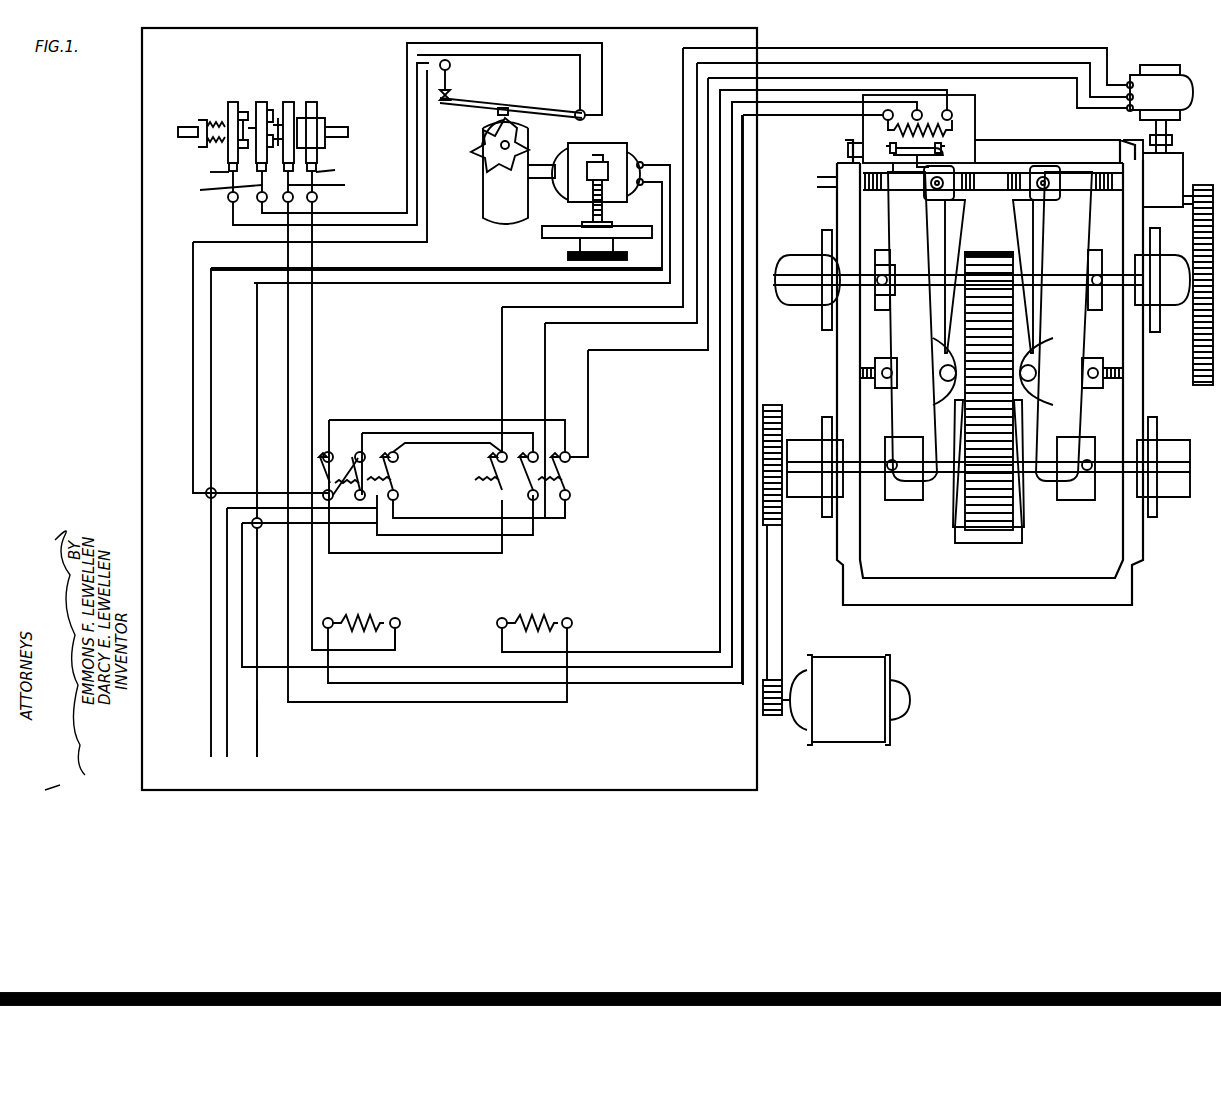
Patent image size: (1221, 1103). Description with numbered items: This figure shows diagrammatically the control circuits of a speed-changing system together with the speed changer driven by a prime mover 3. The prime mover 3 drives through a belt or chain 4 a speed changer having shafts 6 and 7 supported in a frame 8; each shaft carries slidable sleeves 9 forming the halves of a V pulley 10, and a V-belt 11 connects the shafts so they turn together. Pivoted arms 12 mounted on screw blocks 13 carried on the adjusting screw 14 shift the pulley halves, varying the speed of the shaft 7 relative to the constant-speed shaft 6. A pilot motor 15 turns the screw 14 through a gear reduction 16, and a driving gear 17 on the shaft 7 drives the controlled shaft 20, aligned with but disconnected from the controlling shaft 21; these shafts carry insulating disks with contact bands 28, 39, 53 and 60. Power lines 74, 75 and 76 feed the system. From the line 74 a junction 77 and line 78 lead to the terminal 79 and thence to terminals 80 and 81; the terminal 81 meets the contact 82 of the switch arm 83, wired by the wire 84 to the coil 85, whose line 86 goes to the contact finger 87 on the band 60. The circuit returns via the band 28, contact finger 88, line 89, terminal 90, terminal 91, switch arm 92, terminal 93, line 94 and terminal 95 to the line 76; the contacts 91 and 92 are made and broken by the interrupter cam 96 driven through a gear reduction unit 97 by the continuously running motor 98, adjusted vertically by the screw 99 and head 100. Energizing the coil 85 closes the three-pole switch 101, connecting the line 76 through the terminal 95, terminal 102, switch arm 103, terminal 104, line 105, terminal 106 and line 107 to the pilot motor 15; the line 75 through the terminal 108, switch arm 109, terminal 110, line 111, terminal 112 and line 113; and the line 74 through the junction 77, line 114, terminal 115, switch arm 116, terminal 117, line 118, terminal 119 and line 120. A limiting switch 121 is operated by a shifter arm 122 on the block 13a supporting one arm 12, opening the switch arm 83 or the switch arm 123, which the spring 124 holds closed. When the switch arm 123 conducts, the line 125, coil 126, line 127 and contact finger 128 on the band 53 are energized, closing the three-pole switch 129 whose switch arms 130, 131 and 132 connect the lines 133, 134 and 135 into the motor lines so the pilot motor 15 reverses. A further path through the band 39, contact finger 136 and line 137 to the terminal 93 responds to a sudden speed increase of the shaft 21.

The prime mover 3 is at (853, 668).
The belt or chain 4 is at (782, 595).
The shaft 6 is at (875, 478).
The shaft 7 is at (778, 272).
The frame 8 is at (1143, 535).
The slidable sleeves 9 is at (940, 478).
The pulley 10 is at (1025, 228).
The V-belt 11 is at (990, 525).
The pivoted arms 12 is at (903, 332).
The screw blocks 13 is at (1046, 175).
The block 13a is at (950, 192).
The adjusting screw 14 is at (992, 192).
The pilot motor 15 is at (1142, 72).
The gear reduction 16 is at (1150, 158).
The driving gear 17 is at (1193, 218).
The controlled shaft 20 is at (185, 125).
The controlling shaft 21 is at (338, 125).
The metal band 28 is at (233, 100).
The metal band 39 is at (262, 100).
The metal contact band 53 is at (288, 100).
The metal contact band 60 is at (314, 100).
The power line 74 is at (259, 728).
The power line 75 is at (225, 719).
The power line 76 is at (209, 695).
The junction 77 is at (259, 528).
The line 78 is at (447, 683).
The terminal 79 is at (917, 96).
The terminal 80 is at (948, 148).
The terminal 81 is at (915, 140).
The contact 82 is at (860, 145).
The switch arm 83 is at (880, 125).
The wire 84 is at (632, 686).
The coil 85 is at (340, 616).
The line 86 is at (314, 345).
The contact finger 87 is at (337, 165).
The contact finger 88 is at (206, 173).
The line 89 is at (233, 218).
The terminal 90 is at (450, 65).
The terminal 91 is at (450, 95).
The switch arm 92 is at (505, 106).
The terminal 93 is at (585, 118).
The line 94 is at (602, 66).
The terminal 95 is at (207, 498).
The interrupter cam 96 is at (498, 158).
The gear reduction unit 97 is at (492, 195).
The motor 98 is at (633, 152).
The screw 99 is at (605, 210).
The head 100 is at (568, 256).
The three-pole switch 101 is at (373, 452).
The terminal 102 is at (323, 492).
The switch arm 103 is at (325, 478).
The terminal 104 is at (324, 454).
The line 105 is at (423, 420).
The terminal 106 is at (570, 460).
The line 107 is at (588, 378).
The terminal 108 is at (344, 485).
The switch arm 109 is at (346, 478).
The terminal 110 is at (356, 453).
The line 111 is at (436, 418).
The terminal 112 is at (549, 471).
The line 113 is at (545, 347).
The line 114 is at (350, 523).
The terminal 115 is at (398, 492).
The switch arm 116 is at (400, 474).
The terminal 117 is at (398, 458).
The line 118 is at (462, 440).
The terminal 119 is at (507, 454).
The line 120 is at (502, 322).
The limiting switch 121 is at (975, 100).
The shifter arm 122 is at (910, 170).
The switch arm 123 is at (957, 130).
The spring 124 is at (935, 125).
The line 125 is at (630, 650).
The coil 126 is at (535, 620).
The line 127 is at (443, 704).
The contact finger 128 is at (332, 183).
The three-pole switch 129 is at (567, 500).
The switch arm 130 is at (492, 474).
The switch arm 131 is at (516, 476).
The switch arm 132 is at (570, 494).
The line 133 is at (472, 553).
The line 134 is at (425, 535).
The line 135 is at (455, 518).
The contact finger 136 is at (215, 190).
The line 137 is at (365, 220).